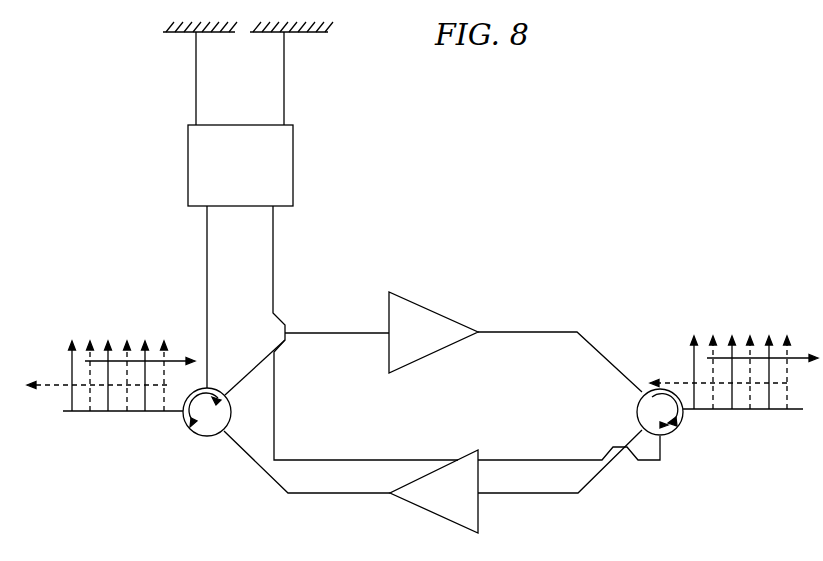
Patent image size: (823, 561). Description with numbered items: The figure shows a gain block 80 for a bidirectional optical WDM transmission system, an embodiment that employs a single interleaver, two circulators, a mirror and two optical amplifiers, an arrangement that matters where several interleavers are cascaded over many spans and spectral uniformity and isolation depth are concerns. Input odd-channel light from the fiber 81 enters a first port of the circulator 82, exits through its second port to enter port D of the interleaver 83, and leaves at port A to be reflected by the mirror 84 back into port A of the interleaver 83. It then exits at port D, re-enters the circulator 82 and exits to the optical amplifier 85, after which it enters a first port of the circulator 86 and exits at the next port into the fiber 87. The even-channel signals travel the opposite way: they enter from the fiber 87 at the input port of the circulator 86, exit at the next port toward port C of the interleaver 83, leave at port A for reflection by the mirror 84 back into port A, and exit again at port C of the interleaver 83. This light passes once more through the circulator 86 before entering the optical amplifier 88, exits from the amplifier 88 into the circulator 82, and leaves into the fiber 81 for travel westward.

The gain block 80 is at (509, 85).
The fiber 81 is at (115, 411).
The circulator 82 is at (200, 438).
The interleaver 83 is at (293, 163).
The mirror 84 is at (307, 32).
The optical amplifier 85 is at (440, 312).
The circulator 86 is at (637, 411).
The fiber 87 is at (740, 409).
The optical amplifier 88 is at (432, 516).